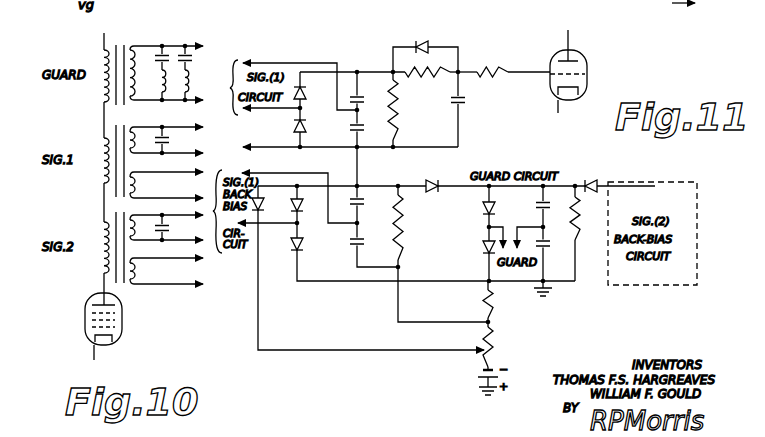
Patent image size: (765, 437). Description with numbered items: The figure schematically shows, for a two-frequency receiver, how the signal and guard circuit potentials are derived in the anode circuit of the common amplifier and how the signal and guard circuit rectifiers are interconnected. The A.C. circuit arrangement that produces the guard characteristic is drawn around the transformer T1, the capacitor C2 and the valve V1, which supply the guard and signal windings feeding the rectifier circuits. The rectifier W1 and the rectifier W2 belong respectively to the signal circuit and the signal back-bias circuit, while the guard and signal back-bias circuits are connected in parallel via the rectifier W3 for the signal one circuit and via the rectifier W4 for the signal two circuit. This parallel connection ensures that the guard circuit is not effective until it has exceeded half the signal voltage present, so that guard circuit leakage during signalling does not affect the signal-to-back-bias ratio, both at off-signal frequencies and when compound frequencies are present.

In FIG. 10, the transformer T1 is at (102, 160).
In FIG. 10, the capacitor C2 is at (170, 140).
In FIG. 10, the vacuum tube V1 is at (97, 325).
In FIG. 11, the rectifier diode W1 is at (425, 48).
In FIG. 11, the rectifier diode W2 is at (368, 268).
In FIG. 11, the rectifier W3 is at (436, 179).
In FIG. 11, the rectifier W4 is at (594, 179).